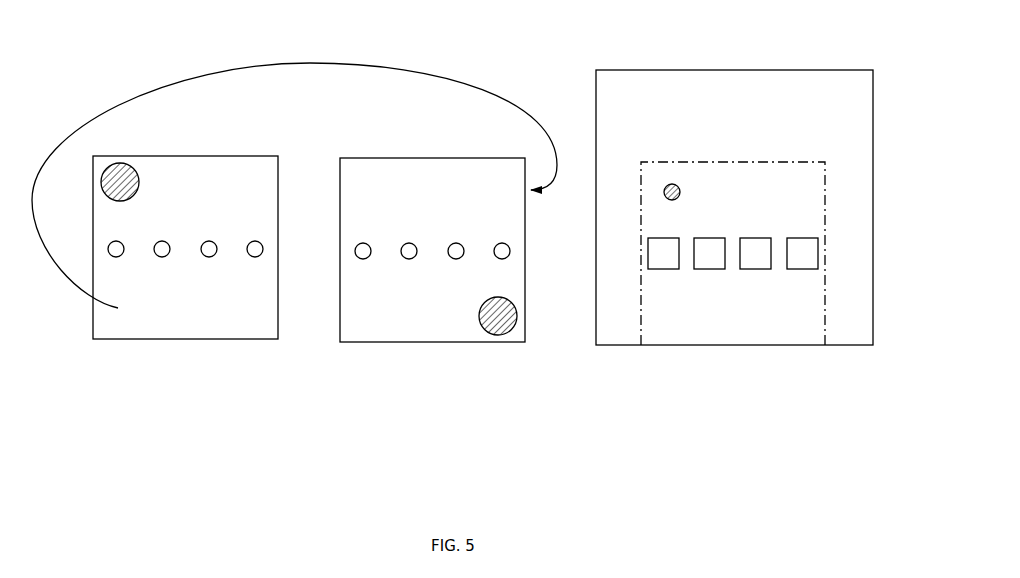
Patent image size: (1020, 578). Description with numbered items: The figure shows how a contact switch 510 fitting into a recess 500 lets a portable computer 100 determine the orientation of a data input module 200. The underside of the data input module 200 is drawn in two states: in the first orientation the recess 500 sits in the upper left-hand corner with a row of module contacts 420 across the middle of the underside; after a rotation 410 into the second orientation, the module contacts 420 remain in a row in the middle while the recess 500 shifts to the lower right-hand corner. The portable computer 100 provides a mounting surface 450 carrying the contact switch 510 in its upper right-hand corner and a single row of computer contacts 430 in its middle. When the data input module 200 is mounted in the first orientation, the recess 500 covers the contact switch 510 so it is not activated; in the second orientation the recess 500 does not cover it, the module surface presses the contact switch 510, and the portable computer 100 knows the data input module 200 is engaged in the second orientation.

The portable computer 100 is at (673, 67).
The data input module 200 is at (309, 296).
The rotation 410 is at (294, 160).
The module contacts 420 is at (256, 259).
The computer contacts 430 is at (664, 271).
The mounting surface 450 is at (639, 242).
The recess 500 is at (120, 160).
The contact switch 510 is at (672, 182).